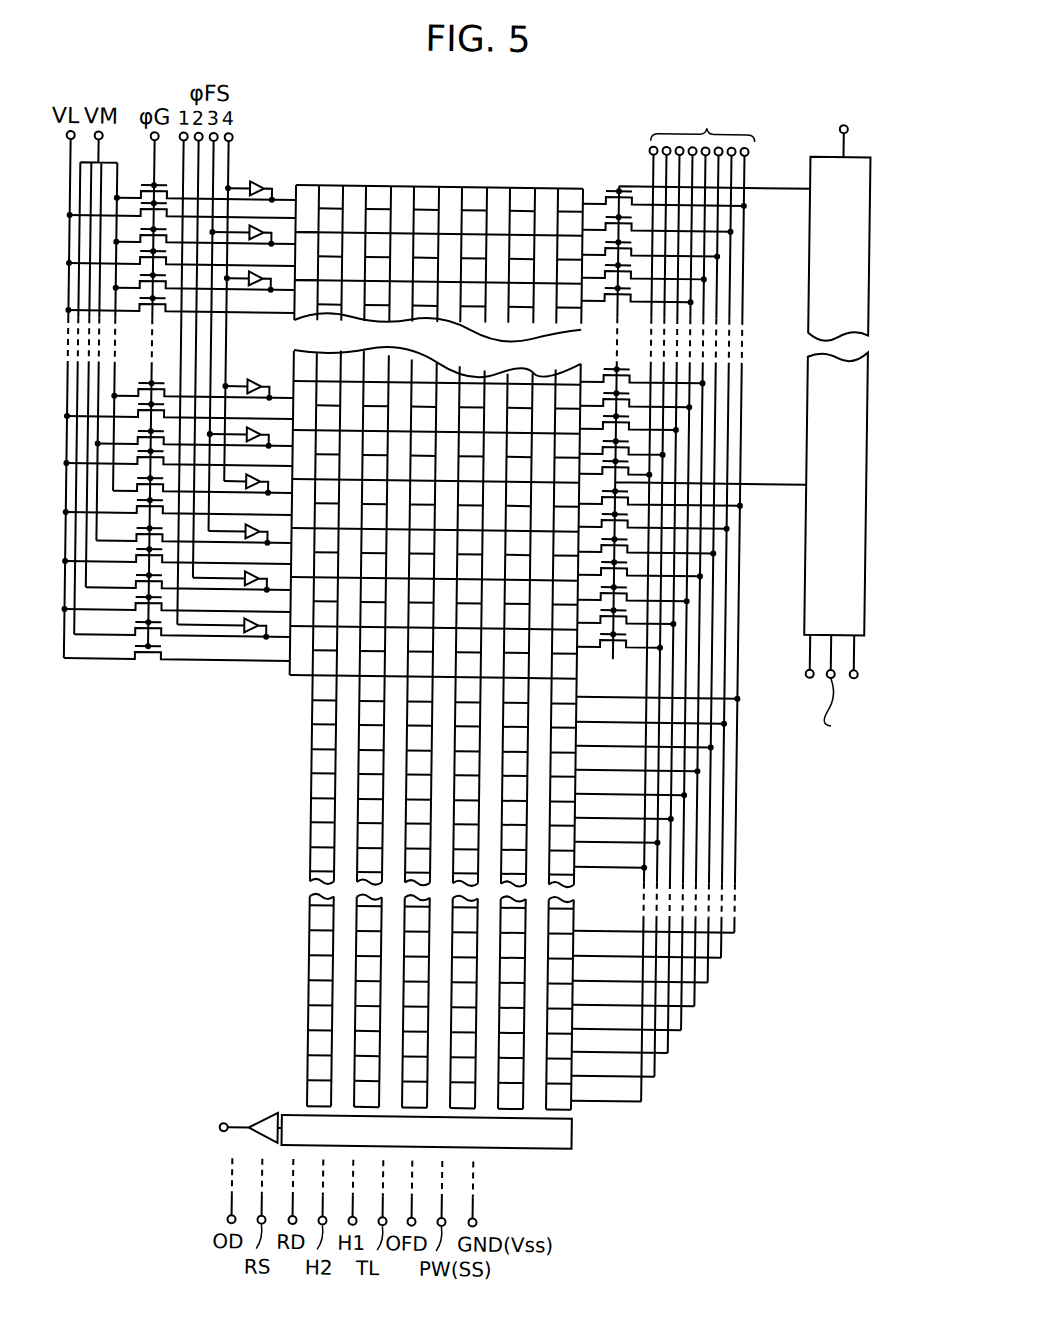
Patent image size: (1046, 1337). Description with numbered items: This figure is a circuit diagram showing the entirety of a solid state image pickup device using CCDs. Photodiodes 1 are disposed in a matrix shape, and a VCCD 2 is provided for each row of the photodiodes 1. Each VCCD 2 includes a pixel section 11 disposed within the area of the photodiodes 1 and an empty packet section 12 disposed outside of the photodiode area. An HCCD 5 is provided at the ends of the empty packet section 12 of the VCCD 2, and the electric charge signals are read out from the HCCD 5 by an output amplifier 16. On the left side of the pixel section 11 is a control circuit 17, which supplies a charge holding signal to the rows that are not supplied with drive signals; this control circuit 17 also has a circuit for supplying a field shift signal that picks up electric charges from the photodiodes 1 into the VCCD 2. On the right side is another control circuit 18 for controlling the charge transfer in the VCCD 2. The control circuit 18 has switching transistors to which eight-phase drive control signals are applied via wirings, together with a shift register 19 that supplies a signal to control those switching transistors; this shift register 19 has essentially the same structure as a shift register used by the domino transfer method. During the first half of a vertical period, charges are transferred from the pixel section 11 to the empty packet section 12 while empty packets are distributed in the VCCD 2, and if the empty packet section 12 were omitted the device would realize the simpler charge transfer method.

The photodiode 1 is at (394, 188).
The VCCD 2 is at (425, 188).
The HCCD 5 is at (566, 1137).
The pixel section 11 is at (437, 405).
The empty packet section 12 is at (459, 912).
The output amplifier 16 is at (269, 1117).
The control circuit 17 is at (163, 679).
The control circuit 18 is at (766, 665).
The shift register 19 is at (804, 417).